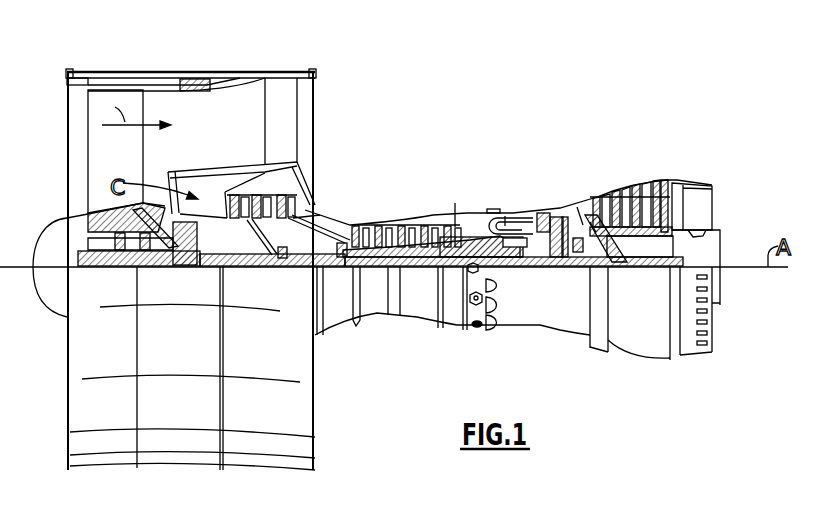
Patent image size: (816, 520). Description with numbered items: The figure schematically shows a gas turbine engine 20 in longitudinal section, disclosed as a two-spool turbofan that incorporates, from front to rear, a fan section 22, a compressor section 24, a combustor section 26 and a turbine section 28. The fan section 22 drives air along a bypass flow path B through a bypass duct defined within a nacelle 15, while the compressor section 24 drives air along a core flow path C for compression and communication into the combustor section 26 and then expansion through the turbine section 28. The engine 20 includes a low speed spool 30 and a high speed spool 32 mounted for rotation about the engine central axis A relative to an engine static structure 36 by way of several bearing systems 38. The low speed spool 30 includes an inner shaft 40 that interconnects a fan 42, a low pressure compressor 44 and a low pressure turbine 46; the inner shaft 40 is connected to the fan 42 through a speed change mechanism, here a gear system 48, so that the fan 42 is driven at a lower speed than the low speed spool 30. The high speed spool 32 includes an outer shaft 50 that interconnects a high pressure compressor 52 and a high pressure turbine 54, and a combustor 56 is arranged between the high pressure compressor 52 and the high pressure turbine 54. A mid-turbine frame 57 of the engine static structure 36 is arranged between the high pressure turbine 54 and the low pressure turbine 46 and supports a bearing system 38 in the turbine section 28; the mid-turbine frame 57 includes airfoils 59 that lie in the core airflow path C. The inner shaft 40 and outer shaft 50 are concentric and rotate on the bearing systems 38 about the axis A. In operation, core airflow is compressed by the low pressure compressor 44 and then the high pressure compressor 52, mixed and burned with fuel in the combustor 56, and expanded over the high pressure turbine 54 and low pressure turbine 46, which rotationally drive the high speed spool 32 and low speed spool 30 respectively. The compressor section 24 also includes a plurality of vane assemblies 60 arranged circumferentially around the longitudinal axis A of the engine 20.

The nacelle 15 is at (193, 75).
The gas turbine engine 20 is at (509, 103).
The fan section 22 is at (142, 64).
The compressor section 24 is at (354, 190).
The combustor section 26 is at (500, 190).
The turbine section 28 is at (608, 162).
The low speed spool 30 is at (423, 280).
The high speed spool 32 is at (455, 225).
The engine static structure 36 is at (452, 340).
The bearing systems 38 is at (289, 266).
The inner shaft 40 is at (330, 280).
The fan 42 is at (131, 163).
The low pressure compressor 44 is at (262, 205).
The low pressure turbine 46 is at (637, 184).
The gear system 48 is at (199, 264).
The outer shaft 50 is at (510, 268).
The high pressure compressor 52 is at (403, 222).
The high pressure turbine 54 is at (583, 185).
The combustor 56 is at (506, 216).
The mid-turbine frame 57 is at (592, 220).
The airfoils 59 is at (592, 243).
The vane assemblies 60 is at (368, 208).